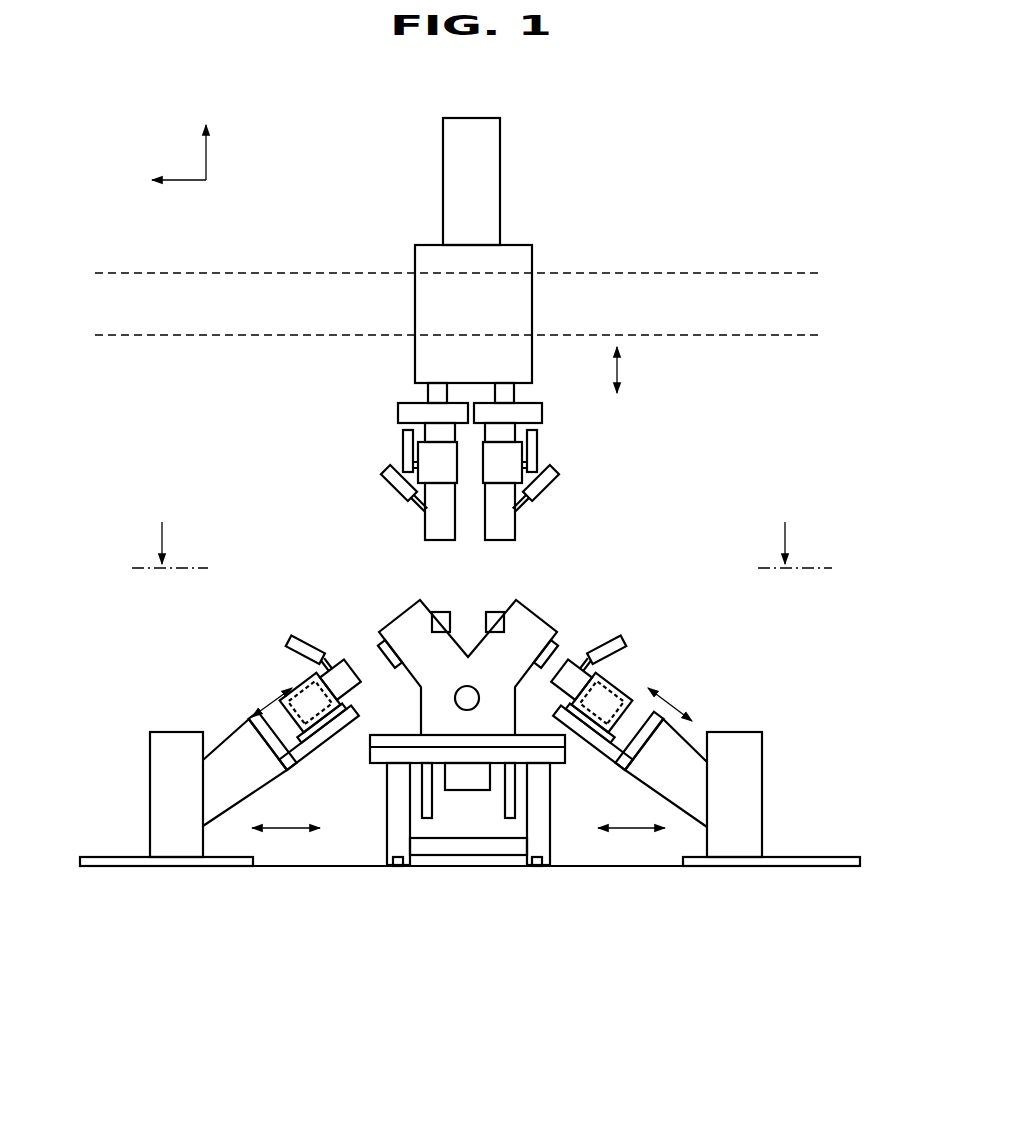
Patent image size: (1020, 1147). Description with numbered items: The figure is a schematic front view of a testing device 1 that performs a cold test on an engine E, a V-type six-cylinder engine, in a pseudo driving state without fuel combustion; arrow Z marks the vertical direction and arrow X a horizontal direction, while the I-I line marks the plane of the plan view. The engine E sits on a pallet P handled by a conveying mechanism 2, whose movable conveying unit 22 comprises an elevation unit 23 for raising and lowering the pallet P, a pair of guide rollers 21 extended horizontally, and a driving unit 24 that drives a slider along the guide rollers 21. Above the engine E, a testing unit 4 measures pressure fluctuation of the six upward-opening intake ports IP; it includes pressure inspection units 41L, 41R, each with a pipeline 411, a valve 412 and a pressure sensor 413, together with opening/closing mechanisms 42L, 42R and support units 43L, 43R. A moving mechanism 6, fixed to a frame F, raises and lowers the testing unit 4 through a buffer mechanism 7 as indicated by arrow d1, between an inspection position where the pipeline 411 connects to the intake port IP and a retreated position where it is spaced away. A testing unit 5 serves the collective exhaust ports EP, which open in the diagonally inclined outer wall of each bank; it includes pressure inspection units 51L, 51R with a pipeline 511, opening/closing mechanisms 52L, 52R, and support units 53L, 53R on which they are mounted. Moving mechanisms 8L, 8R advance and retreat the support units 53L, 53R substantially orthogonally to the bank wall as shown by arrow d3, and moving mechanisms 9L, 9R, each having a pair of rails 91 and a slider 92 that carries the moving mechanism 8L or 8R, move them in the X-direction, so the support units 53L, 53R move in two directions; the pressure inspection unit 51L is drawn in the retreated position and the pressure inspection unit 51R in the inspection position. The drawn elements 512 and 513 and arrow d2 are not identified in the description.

The testing device 1 is at (707, 213).
The conveying mechanism 2 is at (435, 925).
The testing unit 4 is at (327, 393).
The testing unit 5 is at (204, 638).
The moving mechanism 6 is at (538, 252).
The buffer mechanism 7 is at (414, 398).
The moving mechanism 8L is at (208, 745).
The moving mechanism 8R is at (701, 740).
The moving mechanism 9L is at (148, 730).
The moving mechanism 9R is at (791, 732).
The guide rollers 21 is at (395, 868).
The movable conveying unit 22 is at (381, 766).
The elevation unit 23 is at (426, 820).
The driving unit 24 is at (468, 792).
The pressure inspection unit 41L is at (370, 500).
The pressure inspection unit 41R is at (550, 502).
The opening/closing mechanism 42L is at (392, 460).
The opening/closing mechanism 42R is at (548, 448).
The support unit 43L is at (397, 412).
The support unit 43R is at (545, 415).
The pressure inspection unit 51L is at (269, 635).
The pressure inspection unit 51R is at (721, 652).
The opening/closing mechanism 52L is at (306, 742).
The opening/closing mechanism 52R is at (604, 690).
The support unit 53L is at (290, 769).
The support unit 53R is at (614, 769).
The rails 91 is at (110, 856).
The slider 92 is at (150, 782).
The pipeline 411 is at (424, 538).
The valve 412 is at (402, 450).
The pressure sensor 413 is at (386, 476).
The pipeline 511 is at (336, 656).
The internal nut (hidden) 512 is at (292, 688).
The tool tip 513 is at (300, 640).
The pallet P is at (412, 740).
The intake port IP is at (438, 612).
The exhaust port EP is at (383, 645).
The engine E is at (596, 466).
The frame F is at (777, 272).
The I-I line I is at (482, 529).
The arrow d1 is at (636, 370).
The horizontal stroke d2 is at (458, 843).
The arrow d3 is at (458, 697).
The arrow X is at (170, 185).
The arrow Z is at (205, 135).